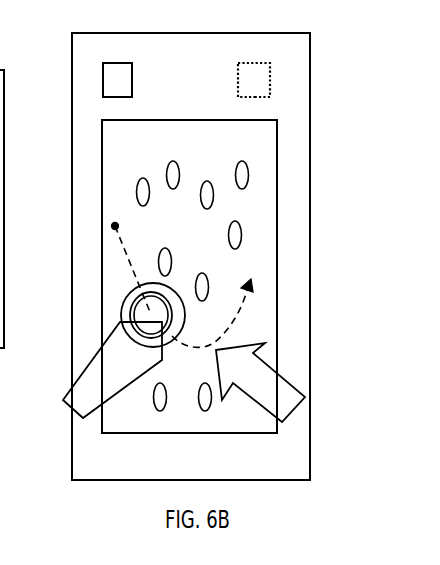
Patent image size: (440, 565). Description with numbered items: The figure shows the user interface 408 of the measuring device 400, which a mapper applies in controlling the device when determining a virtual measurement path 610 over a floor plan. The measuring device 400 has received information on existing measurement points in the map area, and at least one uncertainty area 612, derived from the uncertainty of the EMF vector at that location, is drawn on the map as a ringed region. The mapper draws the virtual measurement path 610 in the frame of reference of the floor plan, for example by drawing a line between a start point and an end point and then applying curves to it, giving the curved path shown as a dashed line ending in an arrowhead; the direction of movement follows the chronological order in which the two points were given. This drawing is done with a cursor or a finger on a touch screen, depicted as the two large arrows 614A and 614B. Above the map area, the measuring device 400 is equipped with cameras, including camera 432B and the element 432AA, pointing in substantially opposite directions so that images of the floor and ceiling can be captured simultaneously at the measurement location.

The measuring device 400 is at (310, 237).
The user interface 408 is at (250, 432).
The first selectable graphical element 432AA is at (132, 75).
The camera 432B is at (238, 65).
The virtual measurement path 610 is at (120, 245).
The uncertainty area 612 is at (127, 305).
The cursor or finger 614A is at (71, 404).
The cursor or finger 614B is at (282, 375).